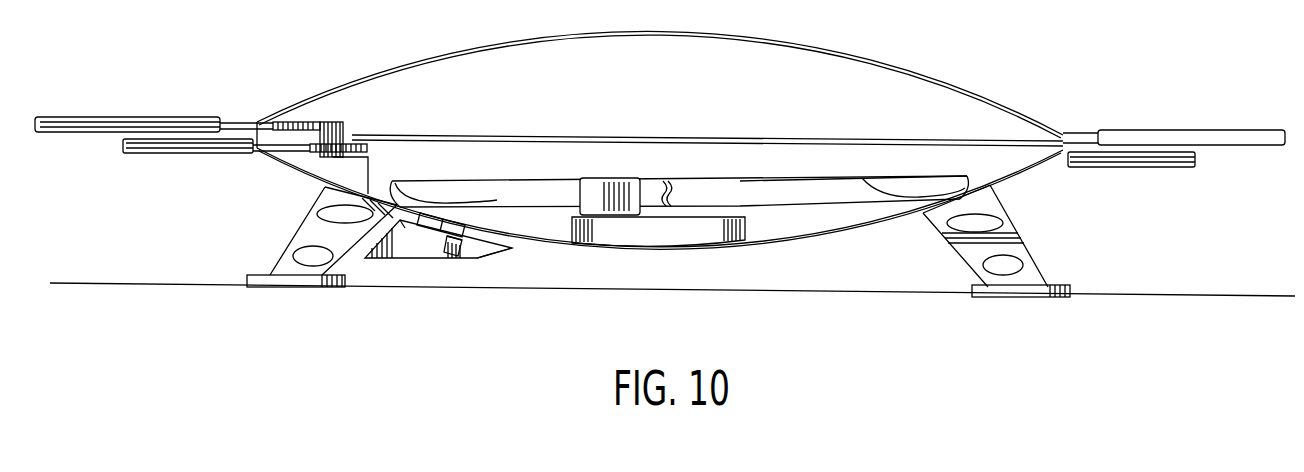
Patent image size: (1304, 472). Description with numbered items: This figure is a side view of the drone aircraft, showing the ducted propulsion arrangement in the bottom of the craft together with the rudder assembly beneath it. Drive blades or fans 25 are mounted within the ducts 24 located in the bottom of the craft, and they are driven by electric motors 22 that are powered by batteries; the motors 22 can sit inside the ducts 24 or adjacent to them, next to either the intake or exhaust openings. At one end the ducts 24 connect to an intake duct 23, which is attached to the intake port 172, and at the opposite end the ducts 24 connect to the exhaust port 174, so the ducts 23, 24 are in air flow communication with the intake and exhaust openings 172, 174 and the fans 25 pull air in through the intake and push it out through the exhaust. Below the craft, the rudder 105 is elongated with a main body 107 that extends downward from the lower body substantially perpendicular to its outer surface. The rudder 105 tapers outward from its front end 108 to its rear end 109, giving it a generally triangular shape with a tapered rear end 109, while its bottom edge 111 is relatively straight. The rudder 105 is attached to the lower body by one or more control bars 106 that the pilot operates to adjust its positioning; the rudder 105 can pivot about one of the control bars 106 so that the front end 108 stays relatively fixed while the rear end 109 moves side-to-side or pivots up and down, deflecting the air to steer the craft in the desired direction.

The electric motor 22 is at (605, 178).
The intake duct 23 is at (679, 177).
The duct 24 is at (742, 190).
The drive blade/fan 25 is at (668, 185).
The rudder 105 is at (438, 248).
The control bar 106 is at (473, 232).
The main body 107 is at (418, 216).
The front end 108 is at (507, 250).
The rear end 109 is at (368, 252).
The bottom edge 111 is at (403, 232).
The intake port 172 is at (905, 186).
The exhaust port 174 is at (470, 190).